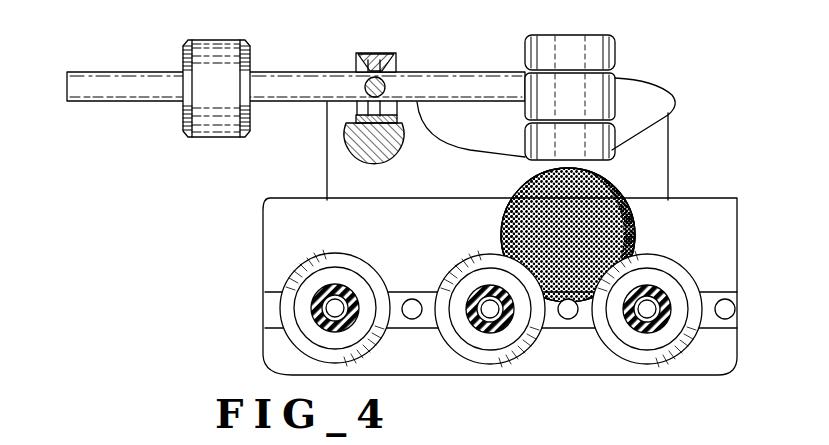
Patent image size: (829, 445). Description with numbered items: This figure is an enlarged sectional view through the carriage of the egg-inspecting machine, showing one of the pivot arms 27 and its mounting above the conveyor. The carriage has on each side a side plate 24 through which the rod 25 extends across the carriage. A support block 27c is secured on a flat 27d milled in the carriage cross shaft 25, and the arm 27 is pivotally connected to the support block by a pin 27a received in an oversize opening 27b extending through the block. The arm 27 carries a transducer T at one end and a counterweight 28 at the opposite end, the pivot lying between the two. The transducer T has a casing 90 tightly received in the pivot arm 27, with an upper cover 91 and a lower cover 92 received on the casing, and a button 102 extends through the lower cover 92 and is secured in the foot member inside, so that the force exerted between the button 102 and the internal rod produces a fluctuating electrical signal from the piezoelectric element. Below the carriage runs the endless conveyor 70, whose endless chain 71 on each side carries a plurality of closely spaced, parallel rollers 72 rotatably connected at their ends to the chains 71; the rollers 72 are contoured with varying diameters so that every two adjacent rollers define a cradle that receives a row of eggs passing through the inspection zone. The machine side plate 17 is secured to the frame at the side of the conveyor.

The side plate 17 is at (270, 214).
The side plate 24 is at (327, 155).
The rod 25 is at (346, 136).
The arm 27 is at (473, 72).
The pin 27a is at (366, 82).
The oversize opening 27b is at (396, 66).
The support block 27c is at (376, 53).
The flat 27d is at (356, 119).
The counterweight 28 is at (185, 45).
The endless conveyor 70 is at (265, 300).
The endless chain 71 is at (412, 292).
The roller 72 is at (372, 345).
The casing 90 is at (615, 82).
The upper cover 91 is at (605, 36).
The lower cover 92 is at (525, 157).
The button 102 is at (592, 172).
The transducer T is at (615, 62).